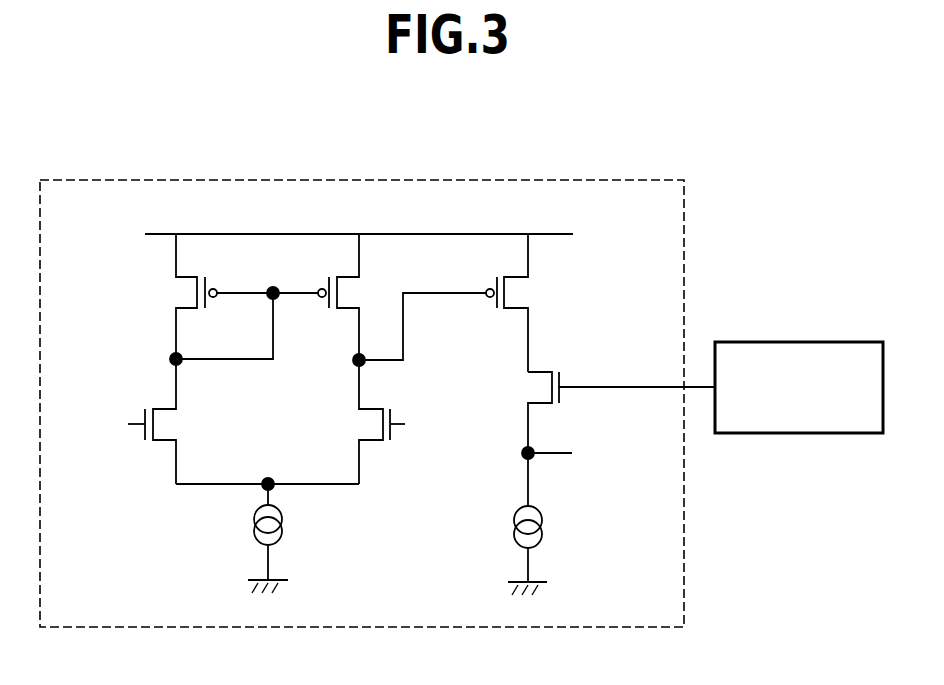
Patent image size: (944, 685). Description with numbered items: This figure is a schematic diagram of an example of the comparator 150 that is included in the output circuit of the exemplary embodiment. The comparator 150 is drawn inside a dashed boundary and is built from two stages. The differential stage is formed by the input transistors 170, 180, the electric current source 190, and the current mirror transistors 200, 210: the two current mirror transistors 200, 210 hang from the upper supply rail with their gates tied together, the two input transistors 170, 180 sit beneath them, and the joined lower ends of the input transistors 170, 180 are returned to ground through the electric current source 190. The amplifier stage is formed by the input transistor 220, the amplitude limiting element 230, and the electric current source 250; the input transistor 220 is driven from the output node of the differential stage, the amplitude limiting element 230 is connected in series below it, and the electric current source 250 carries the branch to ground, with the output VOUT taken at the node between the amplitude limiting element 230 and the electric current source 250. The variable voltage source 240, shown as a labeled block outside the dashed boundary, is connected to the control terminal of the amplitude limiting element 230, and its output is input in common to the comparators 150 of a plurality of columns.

The comparator 150 is at (383, 180).
The input transistor 170 is at (150, 445).
The input transistor 180 is at (385, 443).
The electric current source 190 is at (253, 533).
The current mirror transistor 200 is at (174, 293).
The current mirror transistor 210 is at (361, 293).
The input transistor 220 is at (500, 314).
The amplitude limiting element 230 is at (530, 388).
The variable voltage source 240 is at (798, 342).
The electric current source 250 is at (513, 533).